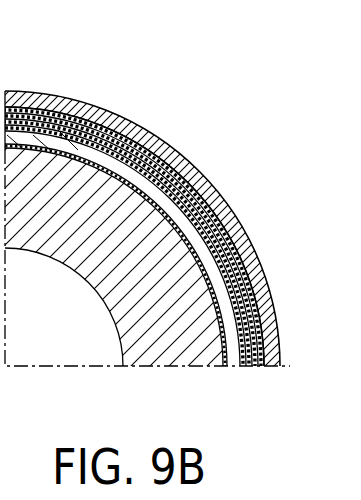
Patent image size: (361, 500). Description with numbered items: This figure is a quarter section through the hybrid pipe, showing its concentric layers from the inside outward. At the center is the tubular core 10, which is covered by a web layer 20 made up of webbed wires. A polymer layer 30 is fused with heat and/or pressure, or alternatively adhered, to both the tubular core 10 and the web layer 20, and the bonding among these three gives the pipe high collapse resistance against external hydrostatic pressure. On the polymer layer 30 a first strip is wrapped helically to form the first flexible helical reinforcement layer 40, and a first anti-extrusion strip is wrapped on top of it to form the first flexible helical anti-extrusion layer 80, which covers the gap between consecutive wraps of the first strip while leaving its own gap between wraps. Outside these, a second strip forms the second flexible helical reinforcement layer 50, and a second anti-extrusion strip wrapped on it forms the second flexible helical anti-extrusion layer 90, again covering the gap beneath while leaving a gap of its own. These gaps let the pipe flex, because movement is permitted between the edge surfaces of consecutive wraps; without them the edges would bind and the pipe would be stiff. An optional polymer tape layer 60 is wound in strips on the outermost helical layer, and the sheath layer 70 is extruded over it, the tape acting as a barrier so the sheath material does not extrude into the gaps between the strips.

The tubular core 10 is at (36, 178).
The web layer 20 is at (56, 122).
The polymer layer 30 is at (80, 145).
The first flexible helical reinforcement layer 40 is at (118, 152).
The second flexible helical reinforcement layer 50 is at (172, 170).
The polymer tape layer 60 is at (218, 190).
The sheath layer 70 is at (240, 212).
The first flexible helical anti-extrusion layer 80 is at (145, 160).
The second flexible helical anti-extrusion layer 90 is at (198, 182).